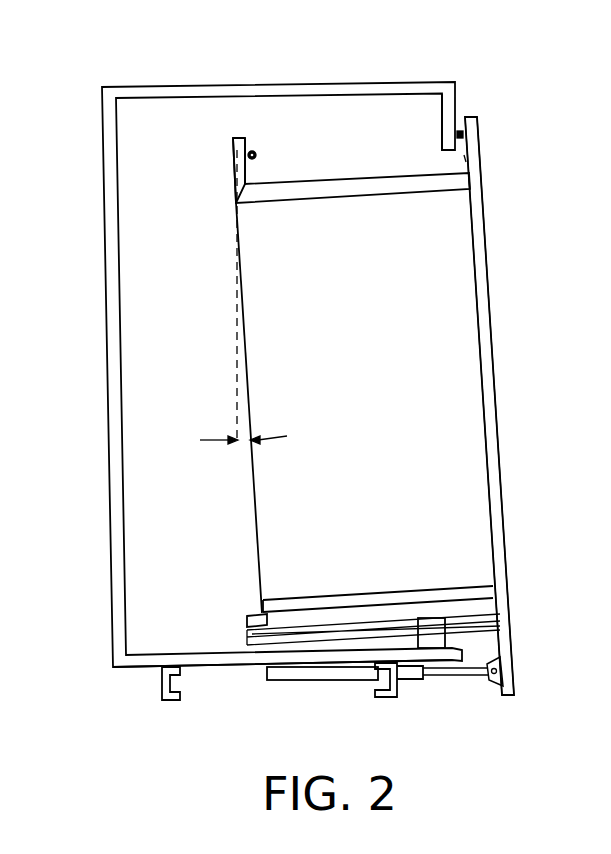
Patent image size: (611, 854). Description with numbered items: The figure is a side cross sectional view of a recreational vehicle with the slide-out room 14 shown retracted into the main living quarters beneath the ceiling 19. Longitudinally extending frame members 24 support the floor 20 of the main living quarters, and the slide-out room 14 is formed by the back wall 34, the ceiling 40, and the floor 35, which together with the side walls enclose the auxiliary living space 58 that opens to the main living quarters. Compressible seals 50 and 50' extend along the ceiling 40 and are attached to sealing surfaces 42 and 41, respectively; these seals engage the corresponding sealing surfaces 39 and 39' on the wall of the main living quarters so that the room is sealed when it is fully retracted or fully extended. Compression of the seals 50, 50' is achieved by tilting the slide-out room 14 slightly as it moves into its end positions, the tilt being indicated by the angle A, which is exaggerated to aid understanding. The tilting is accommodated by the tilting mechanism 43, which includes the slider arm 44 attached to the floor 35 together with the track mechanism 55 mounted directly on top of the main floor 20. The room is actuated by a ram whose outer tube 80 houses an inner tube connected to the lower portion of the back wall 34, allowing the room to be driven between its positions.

The slide-out room 14 is at (498, 265).
The ceiling 19 is at (155, 84).
The floor 20 is at (232, 668).
The frame members 24 is at (162, 695).
The back wall 34 is at (503, 408).
The floor 35 is at (318, 598).
The sealing surface 39 is at (419, 128).
The sealing surface 39' is at (454, 67).
The ceiling 40 is at (318, 184).
The sealing surface 41 is at (461, 130).
The sealing surface 42 is at (254, 150).
The tilting mechanism 43 is at (476, 643).
The slider arm 44 is at (253, 606).
The compressible seal 50 is at (283, 131).
The compressible seal 50' is at (439, 196).
The track mechanism 55 is at (447, 640).
The auxiliary living space 58 is at (243, 527).
The outer tube 80 is at (300, 681).
The angle A is at (212, 438).